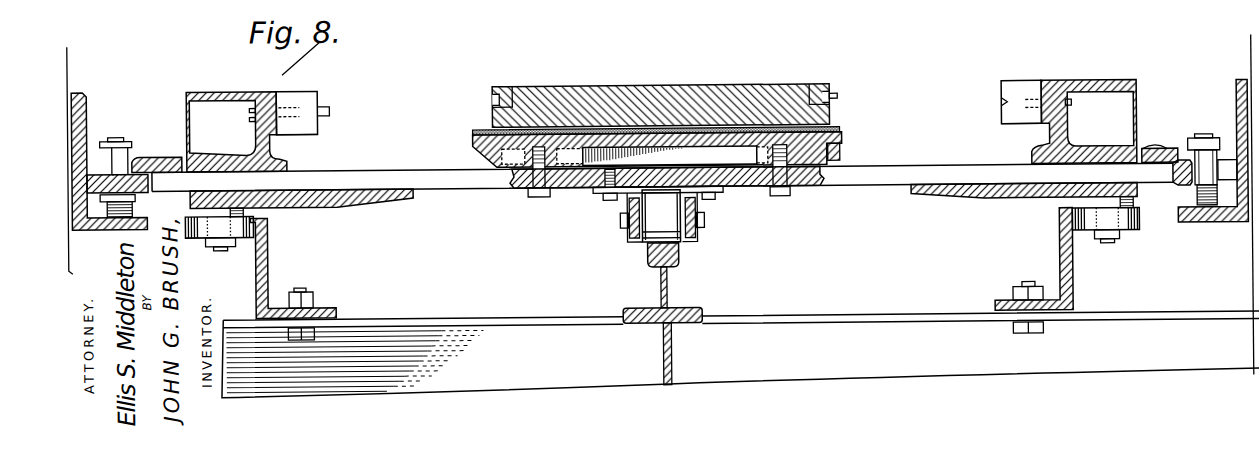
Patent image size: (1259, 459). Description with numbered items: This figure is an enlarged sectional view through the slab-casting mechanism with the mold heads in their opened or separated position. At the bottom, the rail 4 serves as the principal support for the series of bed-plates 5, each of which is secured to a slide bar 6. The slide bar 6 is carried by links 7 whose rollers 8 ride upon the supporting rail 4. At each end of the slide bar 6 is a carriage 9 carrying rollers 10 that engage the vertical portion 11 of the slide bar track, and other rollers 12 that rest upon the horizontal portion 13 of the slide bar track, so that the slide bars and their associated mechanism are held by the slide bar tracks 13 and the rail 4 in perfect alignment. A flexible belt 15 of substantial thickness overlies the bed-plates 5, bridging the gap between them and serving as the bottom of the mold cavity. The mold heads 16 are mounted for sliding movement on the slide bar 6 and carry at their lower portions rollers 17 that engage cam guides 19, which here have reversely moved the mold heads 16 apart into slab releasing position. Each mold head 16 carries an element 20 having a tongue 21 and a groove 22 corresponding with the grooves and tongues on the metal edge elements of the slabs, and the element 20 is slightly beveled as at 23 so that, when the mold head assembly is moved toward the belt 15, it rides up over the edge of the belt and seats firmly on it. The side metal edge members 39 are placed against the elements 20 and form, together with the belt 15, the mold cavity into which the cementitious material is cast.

The rail 4 is at (660, 290).
The bed-plate 5 is at (850, 149).
The slide bar 6 is at (825, 189).
The link 7 is at (623, 197).
The roller 8 is at (652, 235).
The carriage 9 is at (138, 148).
The roller 10 is at (100, 142).
The vertical portion of the slide bar track 11 is at (95, 93).
The roller 12 is at (1202, 143).
The horizontal portion of the slide bar track 13 is at (1211, 227).
The flexible belt 15 is at (840, 131).
The mold head 16 is at (207, 153).
The roller 17 is at (245, 236).
The cam guide 19 is at (267, 258).
The element 20 is at (303, 88).
The tongue 21 is at (328, 105).
The groove 22 is at (1011, 106).
The bevel 23 is at (315, 134).
The side metal edge member 39 is at (502, 86).